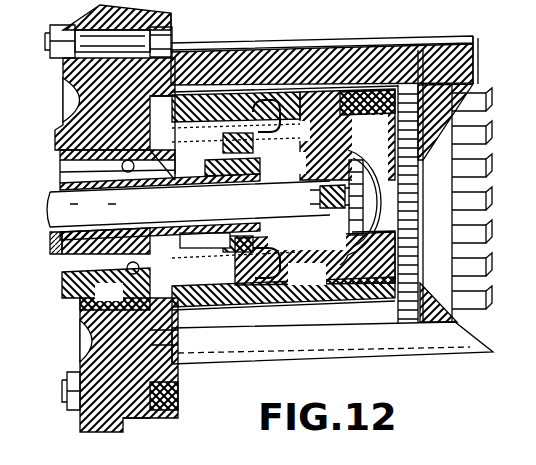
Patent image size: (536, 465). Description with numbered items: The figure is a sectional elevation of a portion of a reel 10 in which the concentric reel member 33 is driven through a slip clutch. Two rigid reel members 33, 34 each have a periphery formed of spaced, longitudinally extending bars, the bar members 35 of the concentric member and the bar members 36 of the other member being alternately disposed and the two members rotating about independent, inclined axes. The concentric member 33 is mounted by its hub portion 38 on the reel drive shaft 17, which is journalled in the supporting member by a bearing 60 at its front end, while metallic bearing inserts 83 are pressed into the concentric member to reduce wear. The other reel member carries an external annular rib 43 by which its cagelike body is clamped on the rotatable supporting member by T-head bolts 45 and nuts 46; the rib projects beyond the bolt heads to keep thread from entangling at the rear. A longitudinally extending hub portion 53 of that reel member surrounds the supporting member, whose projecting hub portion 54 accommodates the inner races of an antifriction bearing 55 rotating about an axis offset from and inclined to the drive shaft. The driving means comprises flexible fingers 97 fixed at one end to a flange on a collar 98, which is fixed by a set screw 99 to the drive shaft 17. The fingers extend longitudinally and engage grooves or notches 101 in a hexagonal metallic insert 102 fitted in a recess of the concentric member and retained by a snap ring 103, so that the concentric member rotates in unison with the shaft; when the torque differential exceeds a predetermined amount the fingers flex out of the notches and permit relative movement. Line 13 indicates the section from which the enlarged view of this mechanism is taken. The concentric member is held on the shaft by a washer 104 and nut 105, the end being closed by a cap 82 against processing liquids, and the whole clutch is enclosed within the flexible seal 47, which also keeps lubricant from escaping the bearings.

The clutch assembly 10 is at (504, 94).
The fluid passage 13 is at (198, 156).
The reel drive shaft 17 is at (54, 224).
The concentric reel member 33 is at (331, 95).
The reel member 34 is at (270, 56).
The bar members 35 is at (478, 262).
The bar members 36 is at (473, 226).
The hub portion 38 is at (280, 122).
The external annular rib 43 is at (140, 412).
The T-head bolts 45 is at (180, 45).
The nuts 46 is at (58, 25).
The flexible seal 47 is at (305, 295).
The hub portion 53 is at (66, 305).
The hub portion 54 is at (62, 262).
The antifriction bearing 55 is at (106, 289).
The bearing 60 is at (188, 204).
The cap 82 is at (366, 162).
The metallic bearing inserts 83 is at (316, 200).
The flexible fingers 97 is at (278, 95).
The collar 98 is at (172, 190).
The set screw 99 is at (208, 180).
The grooves or notches 101 is at (315, 257).
The metallic insert 102 is at (331, 137).
The snap ring 103 is at (288, 266).
The washer 104 is at (352, 257).
The nut 105 is at (360, 238).